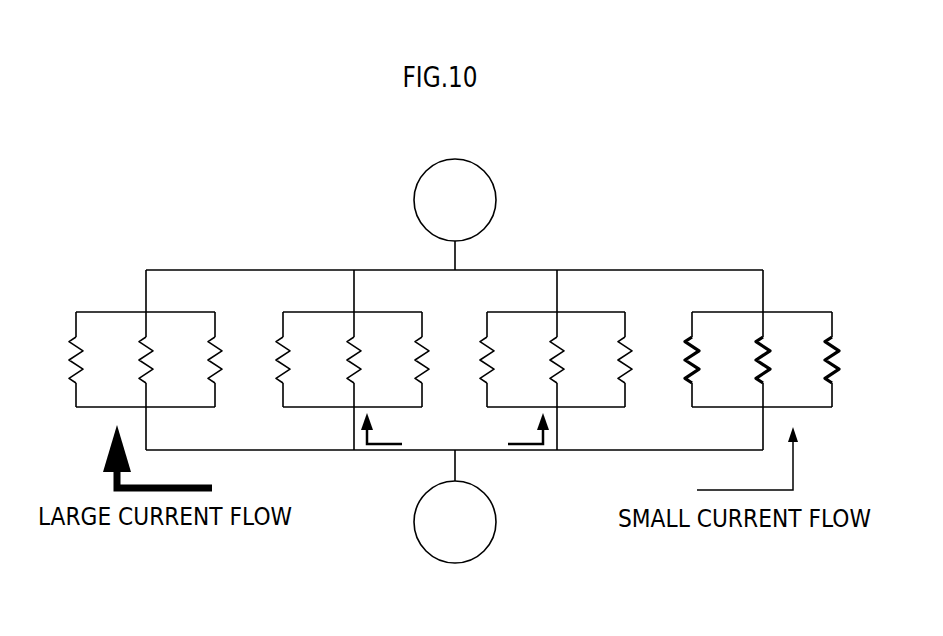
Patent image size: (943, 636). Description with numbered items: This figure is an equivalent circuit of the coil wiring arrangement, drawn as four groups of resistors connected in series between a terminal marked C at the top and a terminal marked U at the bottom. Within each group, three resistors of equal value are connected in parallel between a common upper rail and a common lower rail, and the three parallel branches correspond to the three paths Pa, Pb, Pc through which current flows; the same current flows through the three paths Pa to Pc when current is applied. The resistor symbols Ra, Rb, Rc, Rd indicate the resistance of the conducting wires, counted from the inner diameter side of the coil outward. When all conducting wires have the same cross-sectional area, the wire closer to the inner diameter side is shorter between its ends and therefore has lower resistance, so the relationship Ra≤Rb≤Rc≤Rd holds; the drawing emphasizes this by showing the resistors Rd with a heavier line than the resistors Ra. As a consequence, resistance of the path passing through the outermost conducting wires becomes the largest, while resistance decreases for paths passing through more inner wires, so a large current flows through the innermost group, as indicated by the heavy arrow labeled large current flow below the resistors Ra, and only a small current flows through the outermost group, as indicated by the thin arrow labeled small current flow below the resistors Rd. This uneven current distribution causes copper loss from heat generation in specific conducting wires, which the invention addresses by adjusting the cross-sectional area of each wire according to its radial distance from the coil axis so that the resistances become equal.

The coil-side terminal C is at (455, 214).
The U-phase terminal U is at (455, 506).
The path Pa is at (385, 311).
The path Pb is at (439, 303).
The path Pc is at (521, 311).
The resistance of conducting wire Ra is at (131, 381).
The resistance of conducting wire Rb is at (337, 381).
The resistance of conducting wire Rc is at (540, 381).
The resistance of conducting wire Rd is at (747, 381).